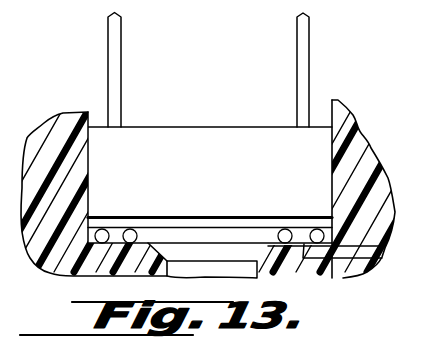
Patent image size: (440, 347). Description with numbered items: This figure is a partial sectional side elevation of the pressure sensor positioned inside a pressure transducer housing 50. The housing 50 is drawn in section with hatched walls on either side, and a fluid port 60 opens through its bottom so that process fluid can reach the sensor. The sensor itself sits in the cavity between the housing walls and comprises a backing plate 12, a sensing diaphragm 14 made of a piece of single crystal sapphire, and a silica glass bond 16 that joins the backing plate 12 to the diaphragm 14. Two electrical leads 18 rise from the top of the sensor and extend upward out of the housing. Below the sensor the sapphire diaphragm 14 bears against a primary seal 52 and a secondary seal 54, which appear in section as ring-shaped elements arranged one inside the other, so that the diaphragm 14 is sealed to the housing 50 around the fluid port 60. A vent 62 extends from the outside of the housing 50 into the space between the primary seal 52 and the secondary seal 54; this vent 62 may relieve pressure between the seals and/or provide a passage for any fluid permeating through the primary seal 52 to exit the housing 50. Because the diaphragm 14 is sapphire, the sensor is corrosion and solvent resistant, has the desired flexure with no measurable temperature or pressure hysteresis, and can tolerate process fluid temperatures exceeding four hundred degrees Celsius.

The backing plate 12 is at (202, 136).
The sensing diaphragm 14 is at (188, 226).
The silica glass bond 16 is at (143, 216).
The electrical leads 18 is at (309, 52).
The pressure transducer housing 50 is at (42, 160).
The primary seal 52 is at (283, 231).
The secondary seal 54 is at (313, 231).
The fluid port 60 is at (236, 266).
The vent 62 is at (384, 252).